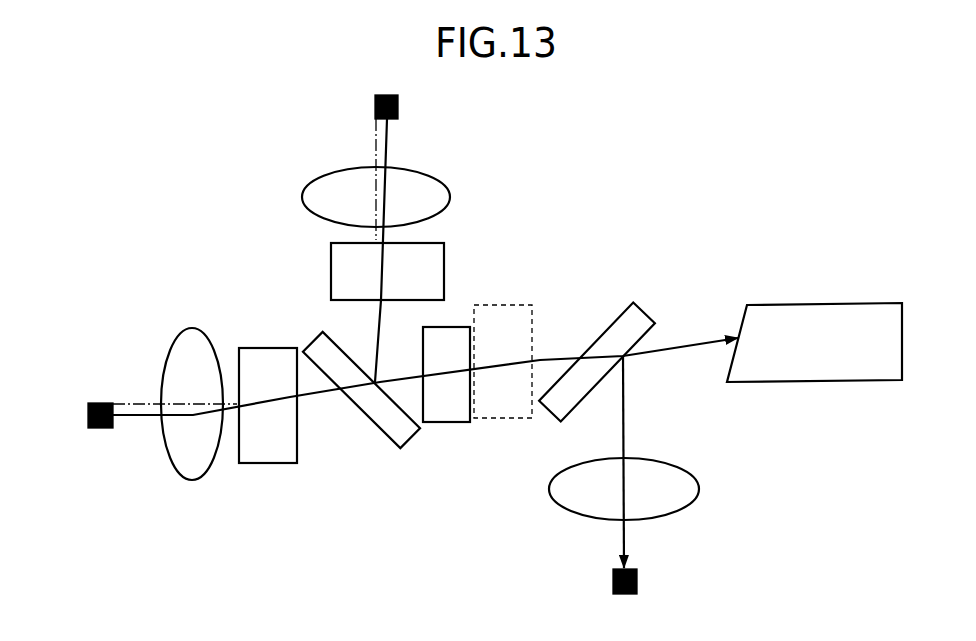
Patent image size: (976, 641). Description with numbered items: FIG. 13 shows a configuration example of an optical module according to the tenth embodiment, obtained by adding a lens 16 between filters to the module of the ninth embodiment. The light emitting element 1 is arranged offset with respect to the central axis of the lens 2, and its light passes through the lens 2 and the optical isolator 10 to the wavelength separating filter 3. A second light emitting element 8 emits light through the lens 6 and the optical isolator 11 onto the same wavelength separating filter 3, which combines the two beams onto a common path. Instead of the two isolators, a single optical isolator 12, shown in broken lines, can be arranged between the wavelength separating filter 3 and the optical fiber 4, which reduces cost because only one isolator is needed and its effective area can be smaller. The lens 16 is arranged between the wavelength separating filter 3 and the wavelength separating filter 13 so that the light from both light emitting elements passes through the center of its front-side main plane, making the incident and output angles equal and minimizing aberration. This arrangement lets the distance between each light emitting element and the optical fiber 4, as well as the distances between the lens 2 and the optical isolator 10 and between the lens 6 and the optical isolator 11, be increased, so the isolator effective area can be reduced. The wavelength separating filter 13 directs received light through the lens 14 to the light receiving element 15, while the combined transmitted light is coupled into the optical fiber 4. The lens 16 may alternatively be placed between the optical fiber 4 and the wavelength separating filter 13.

The light emitting element 1 is at (100, 402).
The lens 2 is at (193, 328).
The optical isolator 10 is at (254, 348).
The wavelength separating filter 3 is at (307, 344).
The light emitting element 8 is at (399, 106).
The lens 6 is at (451, 193).
The optical isolator 11 is at (445, 268).
The lens 16 is at (446, 423).
The optical isolator 12 is at (508, 419).
The wavelength separating filter 13 is at (608, 323).
The optical fiber 4 is at (780, 305).
The lens 14 is at (699, 486).
The light receiving element 15 is at (638, 580).